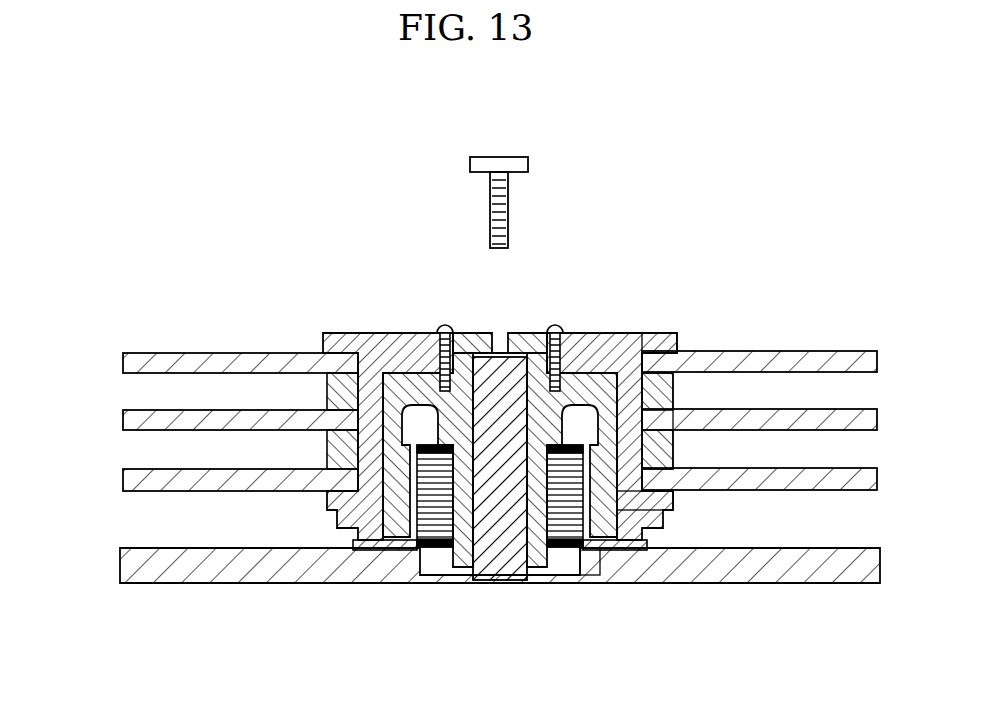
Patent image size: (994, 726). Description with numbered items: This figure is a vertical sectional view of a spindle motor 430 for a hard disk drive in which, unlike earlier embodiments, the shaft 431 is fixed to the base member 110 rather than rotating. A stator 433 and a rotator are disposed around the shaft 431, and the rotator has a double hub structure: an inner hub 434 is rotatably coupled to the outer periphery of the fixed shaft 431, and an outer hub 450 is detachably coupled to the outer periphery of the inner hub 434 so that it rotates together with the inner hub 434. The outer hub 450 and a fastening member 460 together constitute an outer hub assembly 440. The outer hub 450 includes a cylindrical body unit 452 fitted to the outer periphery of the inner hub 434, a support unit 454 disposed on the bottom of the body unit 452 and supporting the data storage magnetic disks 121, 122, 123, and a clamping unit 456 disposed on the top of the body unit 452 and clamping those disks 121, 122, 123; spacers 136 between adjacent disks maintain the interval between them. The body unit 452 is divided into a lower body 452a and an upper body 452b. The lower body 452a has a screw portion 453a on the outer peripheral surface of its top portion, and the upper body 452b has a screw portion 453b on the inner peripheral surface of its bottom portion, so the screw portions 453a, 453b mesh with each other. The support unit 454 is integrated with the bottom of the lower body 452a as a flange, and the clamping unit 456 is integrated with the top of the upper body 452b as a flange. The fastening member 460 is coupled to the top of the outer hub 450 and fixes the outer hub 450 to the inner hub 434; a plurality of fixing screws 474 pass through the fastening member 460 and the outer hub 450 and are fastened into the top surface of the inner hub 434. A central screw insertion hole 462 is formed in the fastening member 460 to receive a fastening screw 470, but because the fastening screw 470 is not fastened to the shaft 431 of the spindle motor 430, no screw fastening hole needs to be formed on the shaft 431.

The base member 110 is at (752, 583).
The data storage magnetic disk 121 is at (123, 481).
The data storage magnetic disk 122 is at (123, 420).
The data storage magnetic disk 123 is at (123, 362).
The spacer 136 is at (327, 388).
The spindle motor 430 is at (620, 606).
The shaft 431 is at (503, 580).
The stator 433 is at (437, 548).
The inner hub 434 is at (358, 550).
The outer hub assembly 440 is at (370, 268).
The outer hub 450 is at (600, 332).
The body unit 452 is at (900, 292).
The lower body 452a is at (677, 440).
The upper body 452b is at (673, 390).
The screw portion 453a is at (605, 550).
The screw portion 453b is at (590, 561).
The support unit 454 is at (662, 505).
The clamping unit 456 is at (672, 332).
The fastening member 460 is at (468, 332).
The central screw insertion hole 462 is at (502, 333).
The fastening screw 470 is at (528, 165).
The fixing screw 474 is at (563, 332).